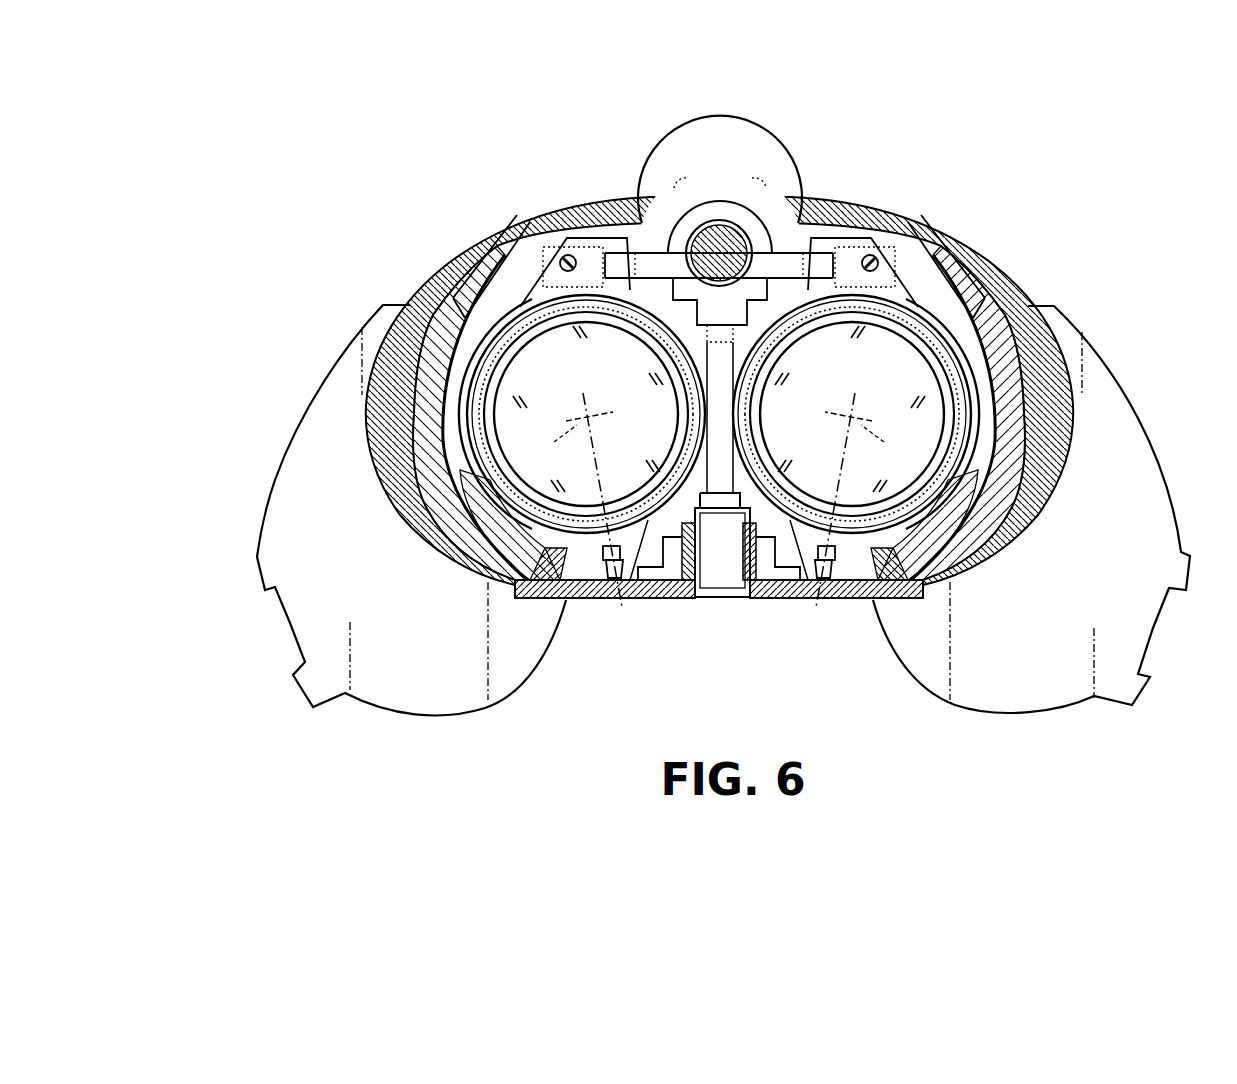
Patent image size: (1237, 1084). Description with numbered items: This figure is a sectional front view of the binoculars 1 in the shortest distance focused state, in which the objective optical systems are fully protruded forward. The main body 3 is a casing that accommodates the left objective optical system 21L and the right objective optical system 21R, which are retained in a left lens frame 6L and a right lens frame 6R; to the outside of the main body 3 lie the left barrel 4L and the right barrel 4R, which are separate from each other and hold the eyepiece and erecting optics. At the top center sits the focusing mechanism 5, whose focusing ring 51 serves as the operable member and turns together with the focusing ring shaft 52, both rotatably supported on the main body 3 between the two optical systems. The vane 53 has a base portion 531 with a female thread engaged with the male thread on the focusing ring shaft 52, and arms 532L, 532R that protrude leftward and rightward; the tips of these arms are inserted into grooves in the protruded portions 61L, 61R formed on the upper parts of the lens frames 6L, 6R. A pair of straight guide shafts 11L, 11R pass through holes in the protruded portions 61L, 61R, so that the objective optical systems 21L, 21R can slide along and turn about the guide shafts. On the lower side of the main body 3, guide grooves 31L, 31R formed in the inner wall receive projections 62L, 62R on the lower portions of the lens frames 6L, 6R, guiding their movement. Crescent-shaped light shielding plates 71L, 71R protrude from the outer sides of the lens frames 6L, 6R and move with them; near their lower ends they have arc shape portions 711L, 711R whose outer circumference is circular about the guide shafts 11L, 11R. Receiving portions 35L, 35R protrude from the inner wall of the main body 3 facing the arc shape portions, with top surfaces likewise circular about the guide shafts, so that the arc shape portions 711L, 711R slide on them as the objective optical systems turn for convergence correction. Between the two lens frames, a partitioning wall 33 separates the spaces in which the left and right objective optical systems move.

The binoculars 1 is at (886, 123).
The main body 3 is at (978, 252).
The right barrel 4R is at (286, 628).
The left barrel 4L is at (1160, 628).
The focusing mechanism 5 is at (720, 222).
The focusing ring 51 is at (695, 175).
The focusing ring shaft 52 is at (721, 250).
The vane 53 is at (676, 208).
The base portion 531 is at (748, 218).
The right arm 532R is at (612, 205).
The left arm 532L is at (828, 205).
The right lens frame 6R is at (485, 346).
The left lens frame 6L is at (958, 350).
The right protruded portion 61R is at (576, 250).
The left protruded portion 61L is at (862, 250).
The right guide shaft 11R is at (520, 238).
The left guide shaft 11L is at (918, 238).
The right objective optical system 21R is at (520, 385).
The left objective optical system 21L is at (915, 410).
The partitioning wall 33 is at (735, 400).
The right guide groove 31R is at (641, 598).
The left guide groove 31L is at (800, 598).
The right receiving portion 35R is at (532, 598).
The left receiving portion 35L is at (907, 598).
The right projection 62R is at (622, 608).
The left projection 62L is at (818, 608).
The right light shielding plate 71R is at (470, 545).
The left light shielding plate 71L is at (970, 545).
The right arc shape portion 711R is at (578, 600).
The left arc shape portion 711L is at (862, 600).